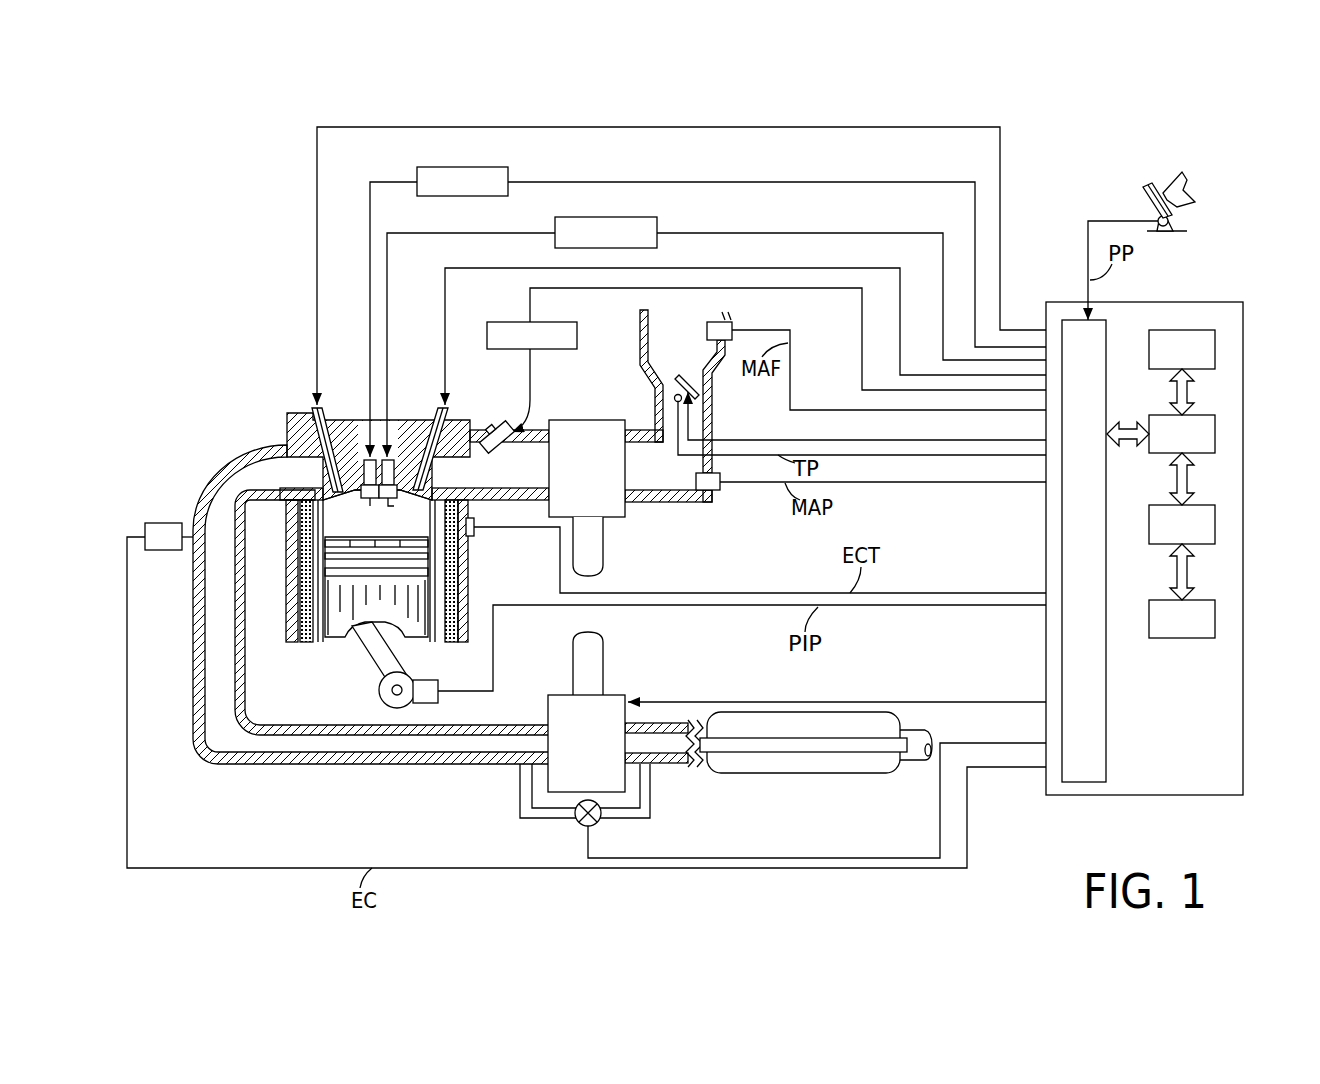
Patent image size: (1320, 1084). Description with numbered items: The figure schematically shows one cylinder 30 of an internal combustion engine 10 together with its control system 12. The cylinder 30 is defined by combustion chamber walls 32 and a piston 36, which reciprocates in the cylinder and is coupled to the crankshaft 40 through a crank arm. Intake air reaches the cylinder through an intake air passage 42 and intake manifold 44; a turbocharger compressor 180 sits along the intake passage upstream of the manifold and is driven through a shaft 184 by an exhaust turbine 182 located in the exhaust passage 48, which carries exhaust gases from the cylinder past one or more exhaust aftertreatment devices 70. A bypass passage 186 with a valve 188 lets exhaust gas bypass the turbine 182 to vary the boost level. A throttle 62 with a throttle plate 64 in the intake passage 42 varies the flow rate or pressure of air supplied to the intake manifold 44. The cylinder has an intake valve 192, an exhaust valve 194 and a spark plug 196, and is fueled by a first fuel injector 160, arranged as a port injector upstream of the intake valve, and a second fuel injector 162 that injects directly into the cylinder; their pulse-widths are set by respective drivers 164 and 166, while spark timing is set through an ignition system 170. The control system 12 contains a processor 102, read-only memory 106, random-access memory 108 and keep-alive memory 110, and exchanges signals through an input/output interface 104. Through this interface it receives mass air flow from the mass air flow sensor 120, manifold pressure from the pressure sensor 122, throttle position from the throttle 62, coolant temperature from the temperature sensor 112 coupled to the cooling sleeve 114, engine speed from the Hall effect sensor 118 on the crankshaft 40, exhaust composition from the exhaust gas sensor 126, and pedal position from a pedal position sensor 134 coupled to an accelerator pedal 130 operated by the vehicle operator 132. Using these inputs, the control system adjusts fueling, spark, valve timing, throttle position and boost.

The internal combustion engine 10 is at (168, 376).
The control system 12 is at (1166, 531).
The cylinder 30 is at (362, 530).
The combustion chamber walls 32 is at (305, 643).
The piston 36 is at (360, 603).
The crankshaft 40 is at (382, 700).
The intake air passage 42 is at (690, 359).
The intake manifold 44 is at (520, 484).
The exhaust passage 48 is at (274, 487).
The throttle 62 is at (700, 388).
The throttle plate 64 is at (670, 380).
The exhaust aftertreatment devices 70 is at (828, 773).
The processor 102 is at (1216, 430).
The input/output interface 104 is at (1107, 333).
The read-only memory 106 is at (1216, 345).
The random-access memory 108 is at (1216, 520).
The keep-alive memory 110 is at (1216, 615).
The temperature sensor 112 is at (474, 530).
The cooling sleeve 114 is at (470, 605).
The Hall effect sensor 118 is at (436, 700).
The mass air flow sensor 120 is at (733, 322).
The pressure sensor 122 is at (718, 490).
The exhaust gas sensor 126 is at (158, 522).
The accelerator pedal 130 is at (1143, 200).
The vehicle operator 132 is at (1188, 188).
The pedal position sensor 134 is at (1177, 220).
The first fuel injector 160 is at (492, 425).
The second fuel injector 162 is at (360, 432).
The driver 164 is at (562, 349).
The driver 166 is at (418, 175).
The ignition system 170 is at (556, 226).
The compressor 180 is at (627, 515).
The exhaust turbine 182 is at (610, 695).
The shaft 184 is at (604, 570).
The bypass passage 186 is at (623, 818).
The valve 188 is at (577, 825).
The intake valve 192 is at (435, 412).
The exhaust valve 194 is at (287, 427).
The spark plug 196 is at (392, 458).